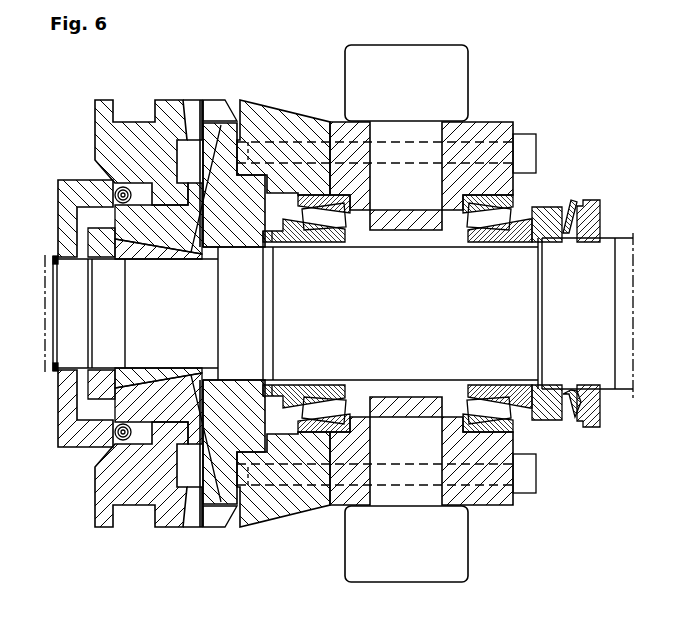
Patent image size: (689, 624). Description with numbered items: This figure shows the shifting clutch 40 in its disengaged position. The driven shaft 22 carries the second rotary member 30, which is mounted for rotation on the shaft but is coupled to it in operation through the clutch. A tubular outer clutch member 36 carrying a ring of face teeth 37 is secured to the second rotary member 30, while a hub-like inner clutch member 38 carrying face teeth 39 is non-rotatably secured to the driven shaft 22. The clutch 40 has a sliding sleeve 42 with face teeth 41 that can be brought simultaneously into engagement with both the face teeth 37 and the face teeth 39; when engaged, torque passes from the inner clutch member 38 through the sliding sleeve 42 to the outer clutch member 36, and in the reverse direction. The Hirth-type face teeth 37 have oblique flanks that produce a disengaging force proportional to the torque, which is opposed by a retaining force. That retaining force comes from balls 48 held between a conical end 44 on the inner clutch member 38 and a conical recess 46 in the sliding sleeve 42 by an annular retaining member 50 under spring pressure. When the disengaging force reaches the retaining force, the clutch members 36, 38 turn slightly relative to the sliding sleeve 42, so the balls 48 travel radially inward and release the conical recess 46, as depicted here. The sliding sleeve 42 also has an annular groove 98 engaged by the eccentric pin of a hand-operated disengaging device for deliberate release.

The driven shaft 22 is at (622, 238).
The second rotary member 30 is at (482, 96).
The tubular outer clutch member 36 is at (253, 121).
The face teeth 37 is at (212, 108).
The hub-like inner clutch member 38 is at (234, 232).
The face teeth 39 is at (191, 252).
The shifting clutch 40 is at (201, 92).
The face teeth 41 is at (188, 110).
The sliding sleeve 42 is at (95, 103).
The conical end 44 is at (147, 226).
The conical recess 46 is at (121, 187).
The balls 48 is at (115, 183).
The annular retaining member 50 is at (62, 200).
The annular groove 98 is at (132, 507).